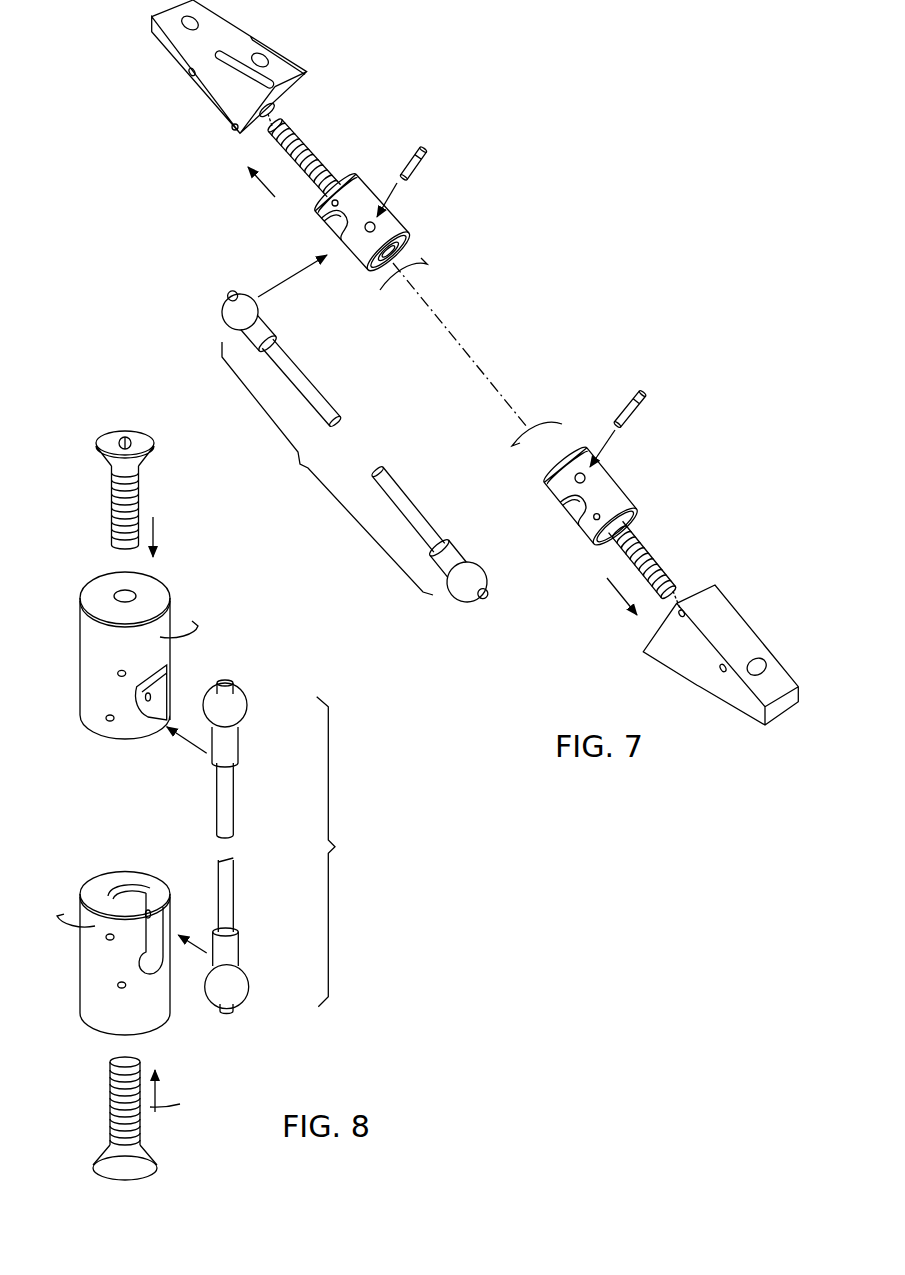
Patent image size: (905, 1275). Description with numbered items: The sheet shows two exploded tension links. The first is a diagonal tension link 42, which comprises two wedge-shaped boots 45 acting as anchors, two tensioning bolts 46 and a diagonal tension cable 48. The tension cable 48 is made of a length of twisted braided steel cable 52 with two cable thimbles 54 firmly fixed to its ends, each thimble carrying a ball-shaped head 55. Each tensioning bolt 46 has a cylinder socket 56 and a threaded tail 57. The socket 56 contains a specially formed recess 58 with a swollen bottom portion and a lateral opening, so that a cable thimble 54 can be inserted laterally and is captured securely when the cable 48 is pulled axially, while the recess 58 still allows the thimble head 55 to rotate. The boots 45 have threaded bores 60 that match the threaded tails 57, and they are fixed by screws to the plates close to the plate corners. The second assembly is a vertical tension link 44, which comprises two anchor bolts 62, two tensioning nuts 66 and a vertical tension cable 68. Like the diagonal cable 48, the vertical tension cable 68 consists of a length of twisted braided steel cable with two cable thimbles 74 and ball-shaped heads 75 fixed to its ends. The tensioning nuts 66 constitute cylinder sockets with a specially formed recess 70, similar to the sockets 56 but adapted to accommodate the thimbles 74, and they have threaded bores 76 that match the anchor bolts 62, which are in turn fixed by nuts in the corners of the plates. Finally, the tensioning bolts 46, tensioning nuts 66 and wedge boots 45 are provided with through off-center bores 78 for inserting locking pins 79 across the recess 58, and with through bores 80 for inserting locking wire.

In FIG. 7, the diagonal tension link 42 is at (597, 187).
In FIG. 8, the vertical tension link 44 is at (388, 819).
In FIG. 7, the wedge-shaped boot 45 is at (733, 605).
In FIG. 7, the tensioning bolt 46 is at (158, 43).
In FIG. 7, the diagonal tension cable 48 is at (327, 468).
In FIG. 7, the twisted braided steel cable 52 is at (312, 385).
In FIG. 7, the cable thimble 54 is at (262, 327).
In FIG. 7, the ball-shaped head 55 is at (232, 312).
In FIG. 7, the cylinder socket 56 is at (410, 224).
In FIG. 7, the threaded tail 57 is at (653, 559).
In FIG. 7, the recess 58 is at (334, 230).
In FIG. 7, the threaded bore 60 is at (281, 110).
In FIG. 8, the anchor bolt 62 is at (143, 495).
In FIG. 8, the tensioning nut 66 is at (97, 587).
In FIG. 8, the vertical tension cable 68 is at (343, 852).
In FIG. 8, the recess 70 is at (153, 678).
In FIG. 8, the cable thimble 74 is at (231, 743).
In FIG. 8, the ball-shaped head 75 is at (232, 700).
In FIG. 8, the threaded bore 76 is at (127, 596).
In FIG. 7, the off-center bore 78 is at (369, 222).
In FIG. 8, the off-center bore 78 is at (108, 720).
In FIG. 7, the locking pin 79 is at (425, 151).
In FIG. 7, the through bore 80 is at (232, 128).
In FIG. 8, the through bore 80 is at (118, 675).